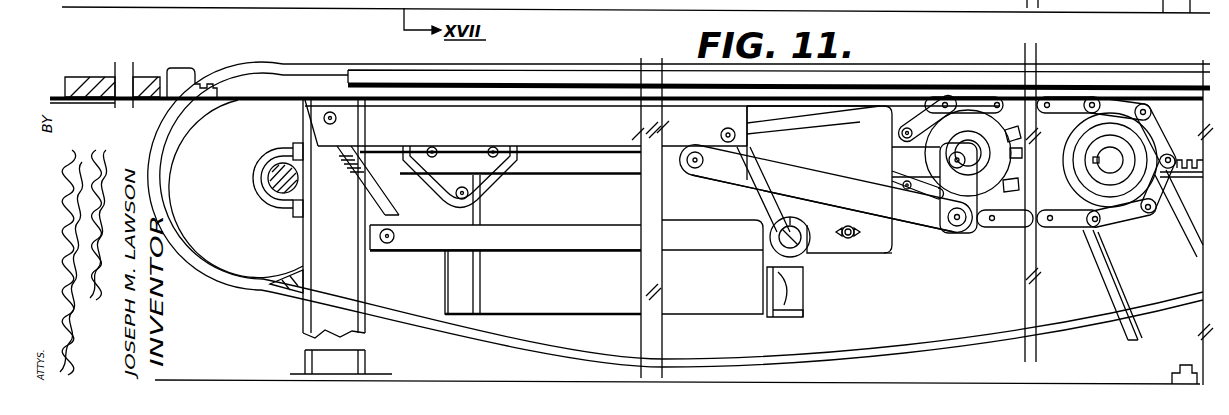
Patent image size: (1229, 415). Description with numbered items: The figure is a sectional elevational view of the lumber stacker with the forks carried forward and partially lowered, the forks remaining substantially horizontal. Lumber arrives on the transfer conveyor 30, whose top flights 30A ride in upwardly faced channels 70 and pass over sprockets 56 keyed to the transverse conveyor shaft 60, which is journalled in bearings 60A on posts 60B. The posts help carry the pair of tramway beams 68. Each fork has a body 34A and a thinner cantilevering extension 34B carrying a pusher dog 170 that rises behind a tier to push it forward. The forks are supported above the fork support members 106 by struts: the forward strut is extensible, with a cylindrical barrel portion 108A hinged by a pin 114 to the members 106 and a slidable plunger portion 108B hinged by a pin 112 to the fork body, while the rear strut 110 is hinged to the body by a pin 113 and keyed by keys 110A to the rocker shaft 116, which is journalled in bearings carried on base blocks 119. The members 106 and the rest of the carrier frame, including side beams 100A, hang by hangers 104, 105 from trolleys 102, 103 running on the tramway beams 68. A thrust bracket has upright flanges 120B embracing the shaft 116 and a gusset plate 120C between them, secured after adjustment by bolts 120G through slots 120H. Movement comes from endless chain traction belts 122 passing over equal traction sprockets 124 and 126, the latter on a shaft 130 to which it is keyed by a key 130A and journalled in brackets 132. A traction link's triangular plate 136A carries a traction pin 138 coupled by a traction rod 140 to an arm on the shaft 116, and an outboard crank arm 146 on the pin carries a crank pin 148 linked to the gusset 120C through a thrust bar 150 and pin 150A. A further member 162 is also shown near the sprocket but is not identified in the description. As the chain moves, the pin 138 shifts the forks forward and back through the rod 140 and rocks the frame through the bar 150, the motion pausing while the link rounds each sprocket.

The transfer conveyor 30 is at (180, 147).
The top flights of the transfer conveyor chains 30A is at (293, 72).
The sprockets 56 is at (212, 165).
The transverse conveyor shaft 60 is at (283, 163).
The bearings 60A is at (265, 170).
The posts 60B is at (305, 248).
The pusher dogs 170 is at (190, 68).
The cantilevering portion or extension 34B is at (180, 103).
The fork body 34A is at (565, 118).
The upwardly faced channels 70 is at (360, 82).
The tramway beams 68 is at (605, 160).
The slidable plunger portion 108B is at (353, 145).
The hinge pins 112 is at (336, 116).
The cylindrical barrel portion 108A is at (360, 170).
The trolleys 102 is at (455, 158).
The hangers 104 is at (476, 198).
The fork support members 106 is at (387, 252).
The hinge pins 114 is at (394, 236).
The side beams 100A is at (587, 305).
The pins 113 is at (721, 134).
The upright flanges 120B is at (743, 222).
The gusset plate 120C is at (833, 127).
The triangular plate portion 136A is at (900, 128).
The traction rods 140 is at (897, 154).
The thrust bars 150 is at (810, 178).
The trolleys 103 is at (815, 200).
The pins 150A is at (687, 167).
The rear struts 110 is at (757, 178).
The keys 110A is at (803, 252).
The rocker shaft 116 is at (795, 270).
The base blocks 119 is at (795, 297).
The hangers 105 is at (790, 310).
The slots 120H is at (856, 235).
The bolts 120G is at (856, 238).
The crank pins 148 is at (948, 214).
The traction pin 138 is at (955, 168).
The traction sprockets 124 is at (1005, 190).
The brackets 132 is at (947, 97).
The endless chain traction belts 122 is at (1063, 97).
The crank arm 146 is at (970, 235).
The traction sprockets 126 is at (1103, 157).
The shaft 130 is at (1110, 167).
The key 130A is at (1065, 262).
The rod 162 is at (1115, 300).